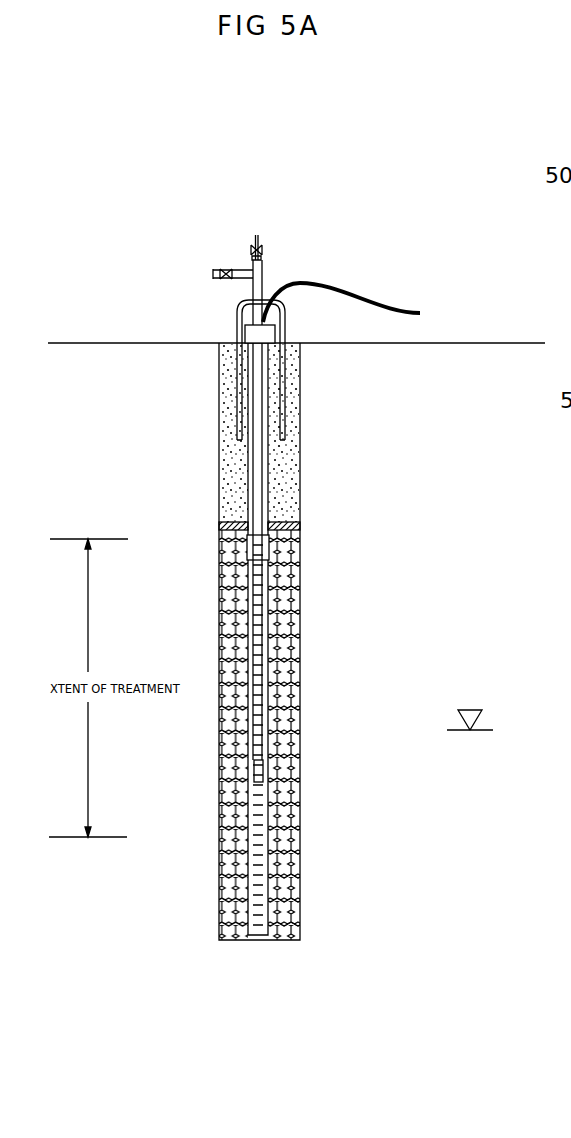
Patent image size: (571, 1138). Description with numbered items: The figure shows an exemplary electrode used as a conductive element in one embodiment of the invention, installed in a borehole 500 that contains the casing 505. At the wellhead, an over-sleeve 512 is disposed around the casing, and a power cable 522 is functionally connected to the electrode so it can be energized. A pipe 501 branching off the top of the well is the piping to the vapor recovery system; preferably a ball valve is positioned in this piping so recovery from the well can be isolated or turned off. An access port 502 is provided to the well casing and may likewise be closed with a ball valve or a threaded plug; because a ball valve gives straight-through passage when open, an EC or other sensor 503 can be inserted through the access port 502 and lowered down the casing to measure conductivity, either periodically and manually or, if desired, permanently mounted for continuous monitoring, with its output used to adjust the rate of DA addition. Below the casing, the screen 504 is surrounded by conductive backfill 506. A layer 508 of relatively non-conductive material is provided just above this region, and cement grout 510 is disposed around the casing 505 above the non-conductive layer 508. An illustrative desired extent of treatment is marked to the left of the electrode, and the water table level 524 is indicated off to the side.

The borehole 500 is at (220, 465).
The pipe 501 is at (220, 270).
The access port 502 is at (253, 248).
The EC sensor 503 is at (262, 772).
The screen 504 is at (266, 695).
The casing 505 is at (265, 450).
The conductive backfill 506 is at (295, 833).
The layer of relatively non-conductive material 508 is at (300, 525).
The cement grout 510 is at (287, 485).
The over-sleeve 512 is at (283, 330).
The power cable 522 is at (420, 313).
The water table level 524 is at (495, 713).